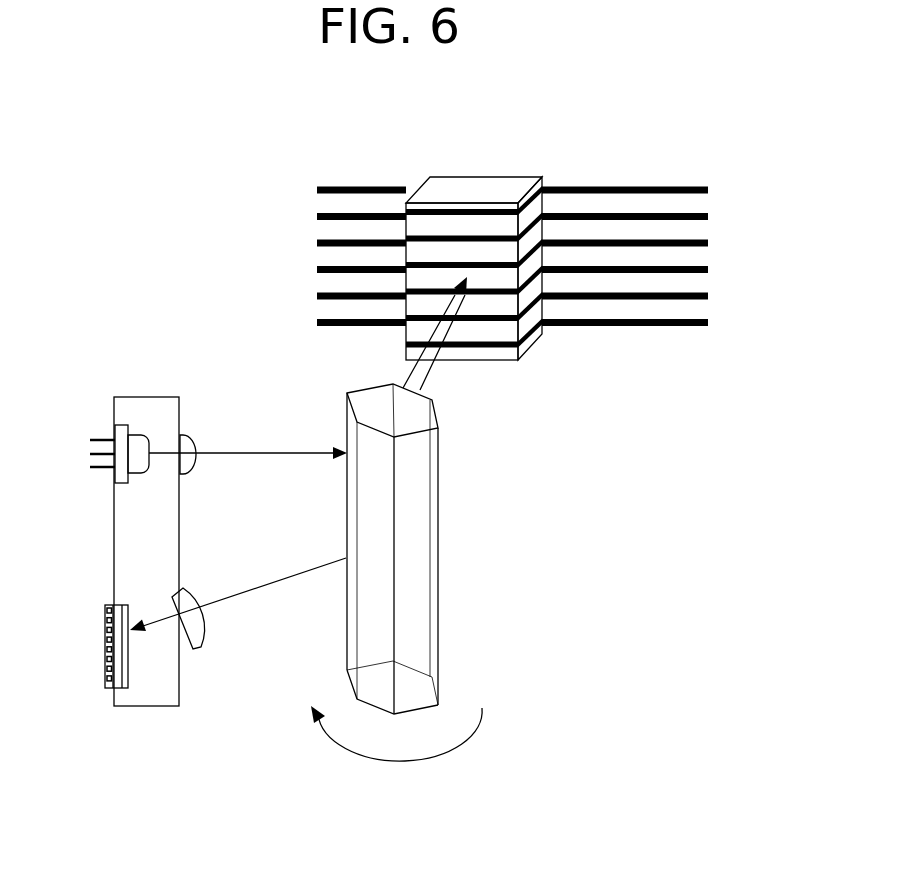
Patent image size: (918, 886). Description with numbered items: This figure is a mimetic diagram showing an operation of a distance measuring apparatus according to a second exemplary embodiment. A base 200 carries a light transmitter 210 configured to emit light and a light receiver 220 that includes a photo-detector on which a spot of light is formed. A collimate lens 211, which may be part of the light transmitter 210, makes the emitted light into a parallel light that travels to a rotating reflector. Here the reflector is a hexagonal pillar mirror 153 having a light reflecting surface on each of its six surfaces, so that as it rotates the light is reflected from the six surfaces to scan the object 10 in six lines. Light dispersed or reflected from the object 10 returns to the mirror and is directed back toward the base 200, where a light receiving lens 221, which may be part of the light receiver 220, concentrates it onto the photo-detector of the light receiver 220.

The object 10 is at (490, 183).
The hexagonal pillar mirror 153 is at (427, 572).
The base 200 is at (145, 405).
The light transmitter 210 is at (138, 463).
The collimate lens 211 is at (185, 437).
The light receiver 220 is at (117, 648).
The light receiving lens 221 is at (187, 602).